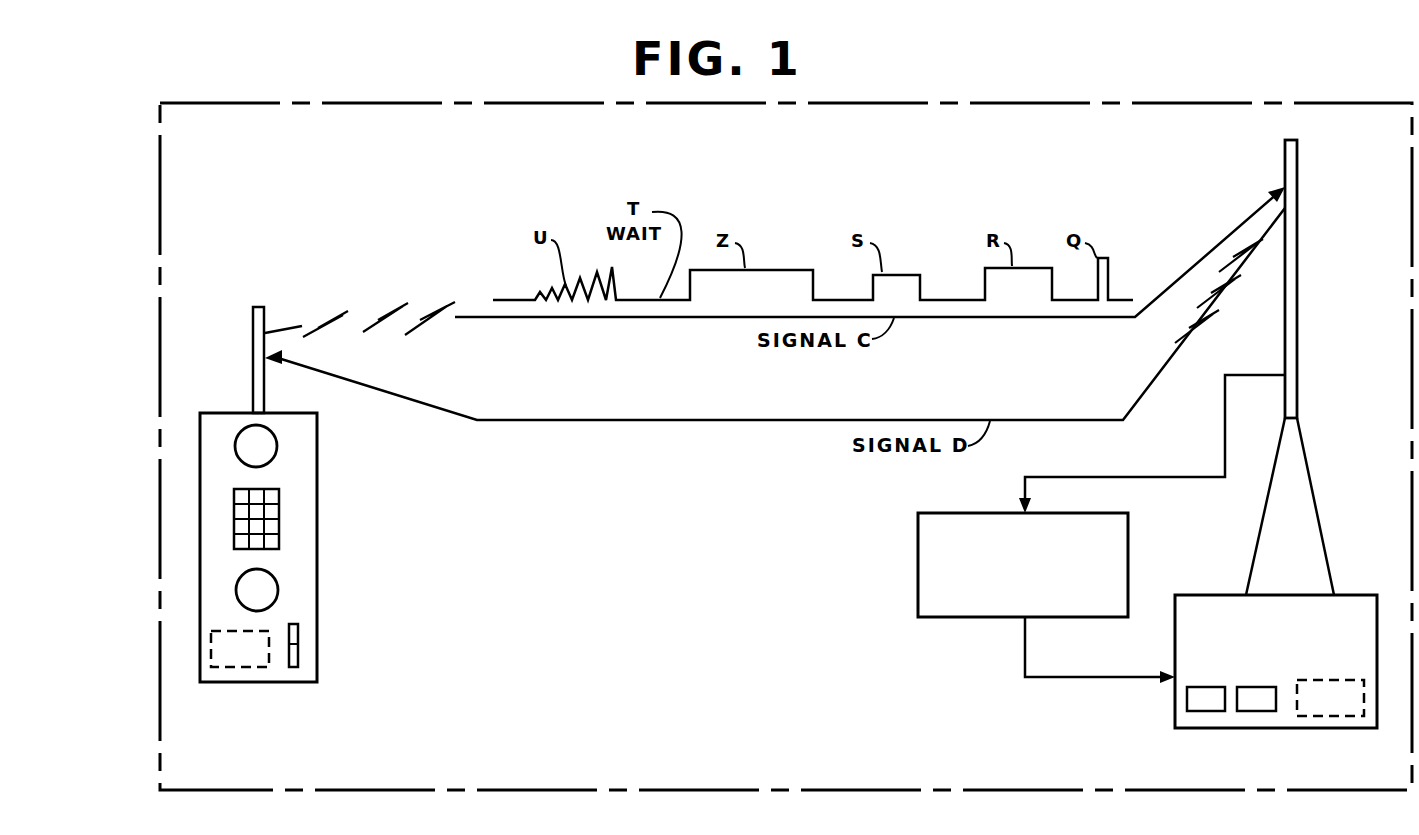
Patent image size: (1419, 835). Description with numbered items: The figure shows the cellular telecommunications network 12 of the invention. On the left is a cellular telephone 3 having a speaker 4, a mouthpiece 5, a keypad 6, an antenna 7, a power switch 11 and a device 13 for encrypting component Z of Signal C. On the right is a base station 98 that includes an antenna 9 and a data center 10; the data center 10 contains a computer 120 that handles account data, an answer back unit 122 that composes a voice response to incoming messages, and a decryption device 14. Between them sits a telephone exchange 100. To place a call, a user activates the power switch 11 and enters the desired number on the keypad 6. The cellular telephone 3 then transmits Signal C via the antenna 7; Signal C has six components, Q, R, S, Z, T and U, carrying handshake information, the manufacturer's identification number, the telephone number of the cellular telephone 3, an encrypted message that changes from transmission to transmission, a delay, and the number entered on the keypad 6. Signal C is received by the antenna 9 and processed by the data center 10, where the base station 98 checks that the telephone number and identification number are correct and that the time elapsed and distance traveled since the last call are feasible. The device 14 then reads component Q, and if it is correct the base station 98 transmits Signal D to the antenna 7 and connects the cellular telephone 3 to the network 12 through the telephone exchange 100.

The cellular telephone 3 is at (325, 488).
The speaker 4 is at (240, 432).
The mouthpiece 5 is at (278, 600).
The keypad 6 is at (280, 530).
The antenna 7 is at (253, 330).
The antenna 9 is at (1297, 225).
The data center 10 is at (1196, 595).
The power switch 11 is at (298, 655).
The cellular telecommunications network 12 is at (381, 99).
The device for encrypting 13 is at (266, 668).
The decryption device 14 is at (1345, 718).
The base station 98 is at (1344, 403).
The telephone exchange 100 is at (918, 548).
The computer 120 is at (1208, 712).
The answer back unit 122 is at (1263, 712).